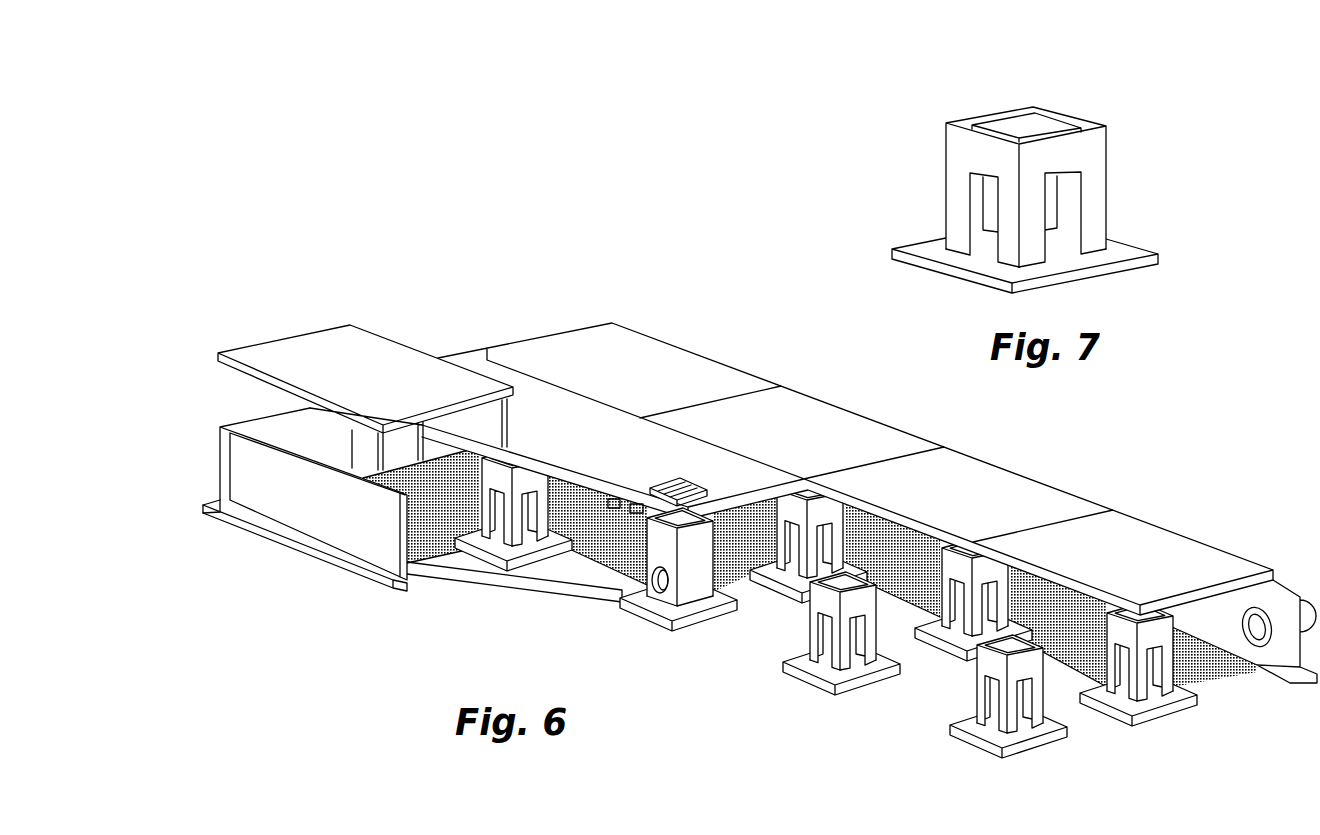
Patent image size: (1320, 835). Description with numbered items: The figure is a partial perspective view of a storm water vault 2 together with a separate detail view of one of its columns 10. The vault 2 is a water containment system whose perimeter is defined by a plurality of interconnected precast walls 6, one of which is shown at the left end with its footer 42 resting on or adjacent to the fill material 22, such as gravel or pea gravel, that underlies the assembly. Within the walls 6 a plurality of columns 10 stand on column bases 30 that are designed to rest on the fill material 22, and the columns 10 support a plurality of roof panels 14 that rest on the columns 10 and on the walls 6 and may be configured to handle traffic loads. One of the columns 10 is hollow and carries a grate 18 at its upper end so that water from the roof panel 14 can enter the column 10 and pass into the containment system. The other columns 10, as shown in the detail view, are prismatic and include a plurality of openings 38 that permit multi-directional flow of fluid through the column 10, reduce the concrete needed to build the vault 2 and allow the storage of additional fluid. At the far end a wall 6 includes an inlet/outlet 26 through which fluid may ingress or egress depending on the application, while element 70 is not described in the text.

In FIG. 6, the storm water vault 2 is at (450, 268).
In FIG. 6, the wall 6 is at (333, 527).
In FIG. 6, the column 10 is at (693, 580).
In FIG. 7, the column 10 is at (952, 74).
In FIG. 6, the roof panel 14 is at (628, 353).
In FIG. 6, the grate 18 is at (693, 478).
In FIG. 6, the fill material 22 is at (588, 573).
In FIG. 6, the inlet/outlet 26 is at (1253, 607).
In FIG. 6, the base 30 is at (660, 615).
In FIG. 7, the base 30 is at (1140, 272).
In FIG. 6, the opening 38 is at (976, 726).
In FIG. 7, the opening 38 is at (988, 203).
In FIG. 6, the footer 42 is at (387, 578).
In FIG. 6, the flange end 70 is at (210, 508).